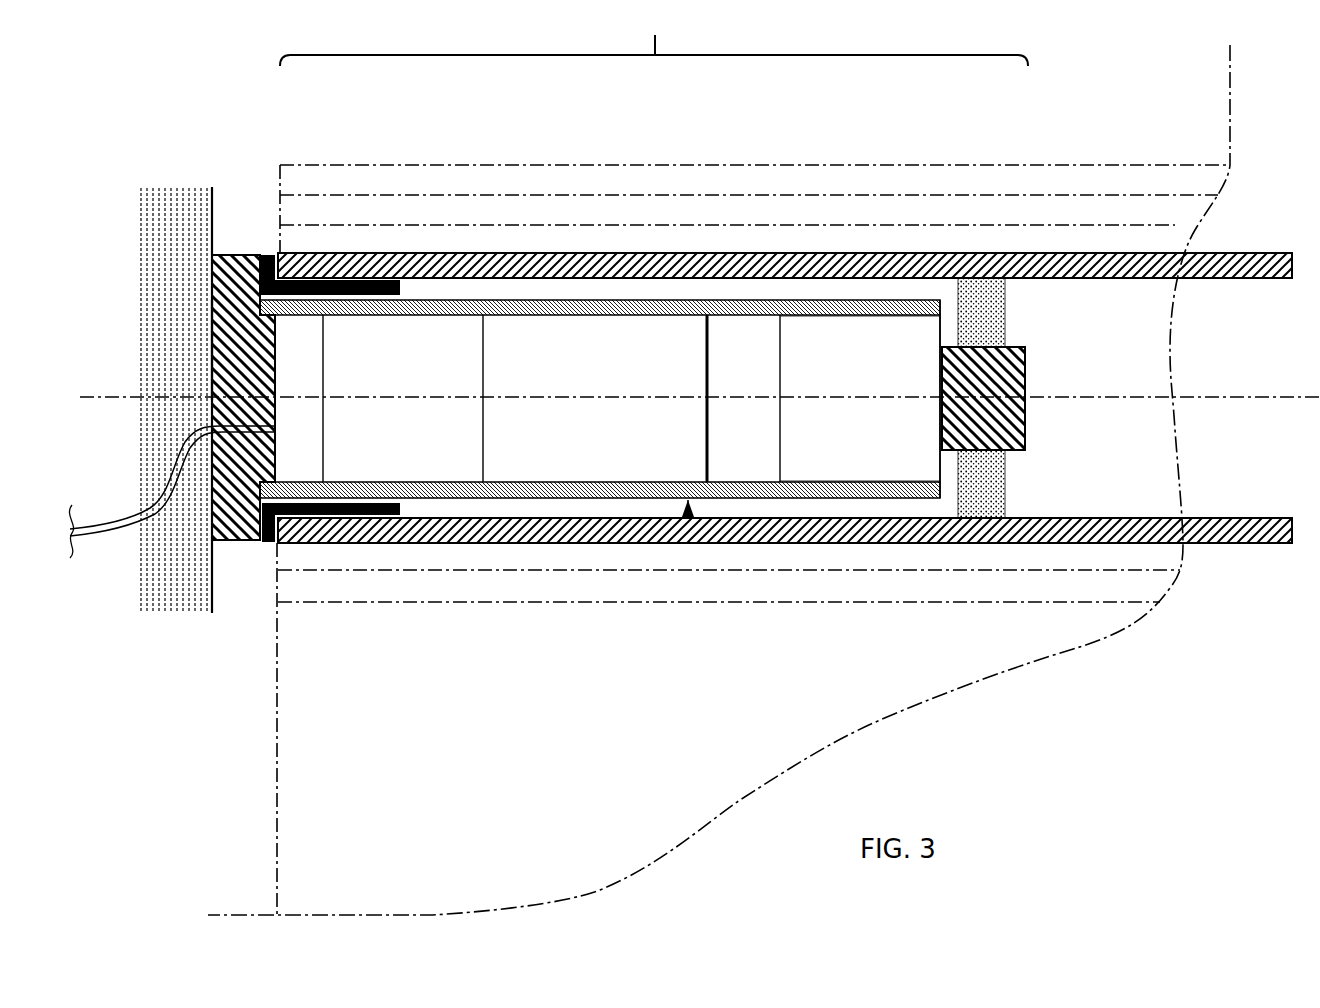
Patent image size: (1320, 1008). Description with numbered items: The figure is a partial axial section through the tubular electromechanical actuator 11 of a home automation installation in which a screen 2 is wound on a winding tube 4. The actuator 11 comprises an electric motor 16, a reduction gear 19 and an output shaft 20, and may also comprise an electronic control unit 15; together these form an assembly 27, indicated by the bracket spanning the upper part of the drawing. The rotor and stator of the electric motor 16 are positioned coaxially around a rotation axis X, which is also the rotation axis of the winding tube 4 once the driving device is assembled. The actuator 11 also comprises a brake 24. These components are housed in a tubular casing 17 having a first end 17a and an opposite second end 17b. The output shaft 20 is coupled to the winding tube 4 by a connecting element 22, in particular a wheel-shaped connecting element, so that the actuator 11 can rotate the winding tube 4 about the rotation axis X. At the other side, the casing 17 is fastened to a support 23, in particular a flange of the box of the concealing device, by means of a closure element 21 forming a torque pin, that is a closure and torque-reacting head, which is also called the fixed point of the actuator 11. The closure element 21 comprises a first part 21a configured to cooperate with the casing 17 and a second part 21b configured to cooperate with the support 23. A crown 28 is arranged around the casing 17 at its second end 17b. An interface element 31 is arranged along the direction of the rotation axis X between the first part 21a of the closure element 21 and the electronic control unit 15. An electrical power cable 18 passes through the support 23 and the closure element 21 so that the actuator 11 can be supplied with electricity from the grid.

The screen 2 is at (1087, 180).
The winding tube 4 is at (1260, 252).
The electromechanical actuator 11 is at (688, 518).
The electronic control unit 15 is at (402, 350).
The electric motor 16 is at (627, 352).
The casing 17 is at (463, 487).
The first end 17a is at (942, 490).
The second end 17b is at (258, 546).
The electrical power cable 18 is at (113, 525).
The reduction gear 19 is at (873, 350).
The output shaft 20 is at (1005, 330).
The closure element 21 is at (245, 258).
The first part 21a is at (266, 476).
The second part 21b is at (210, 344).
The connecting element 22 is at (990, 490).
The support 23 is at (175, 223).
The brake 24 is at (740, 348).
The assembly 27 is at (654, 35).
The crown 28 is at (327, 515).
The interface element 31 is at (305, 335).
The rotation axis X is at (587, 397).